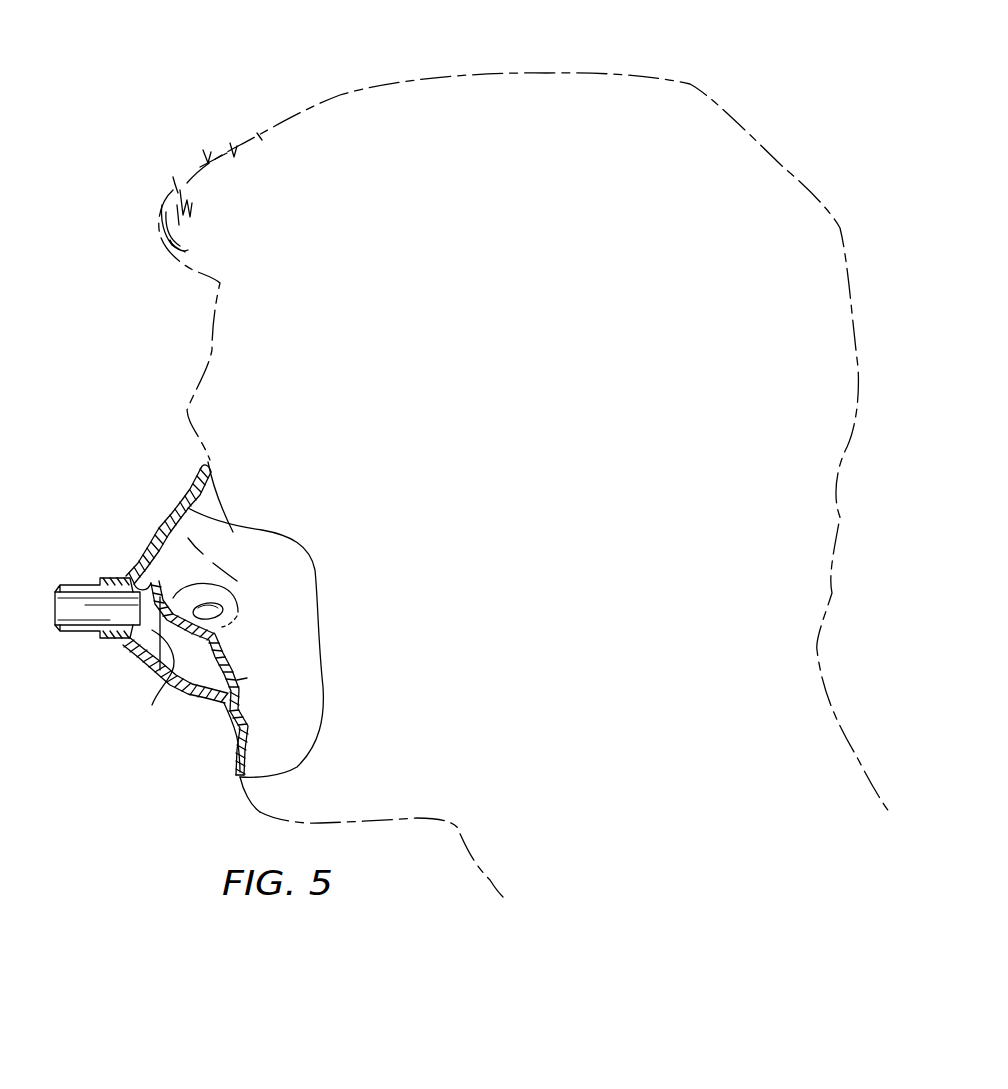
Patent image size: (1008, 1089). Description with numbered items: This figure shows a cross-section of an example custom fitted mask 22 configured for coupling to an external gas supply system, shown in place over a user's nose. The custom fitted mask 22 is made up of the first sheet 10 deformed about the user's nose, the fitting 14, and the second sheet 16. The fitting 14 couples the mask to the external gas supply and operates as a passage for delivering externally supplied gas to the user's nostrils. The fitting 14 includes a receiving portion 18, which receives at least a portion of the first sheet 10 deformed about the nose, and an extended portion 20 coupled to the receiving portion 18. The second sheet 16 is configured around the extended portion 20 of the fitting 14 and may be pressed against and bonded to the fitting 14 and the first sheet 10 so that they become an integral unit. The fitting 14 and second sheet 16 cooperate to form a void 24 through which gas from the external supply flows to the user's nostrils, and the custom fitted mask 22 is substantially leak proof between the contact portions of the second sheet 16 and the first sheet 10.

The first sheet 10 is at (305, 600).
The fitting 14 is at (193, 695).
The second sheet 16 is at (77, 570).
The receiving portion 18 is at (155, 686).
The extended portion 20 is at (80, 640).
The custom fitted mask 22 is at (129, 517).
The void 24 is at (189, 642).